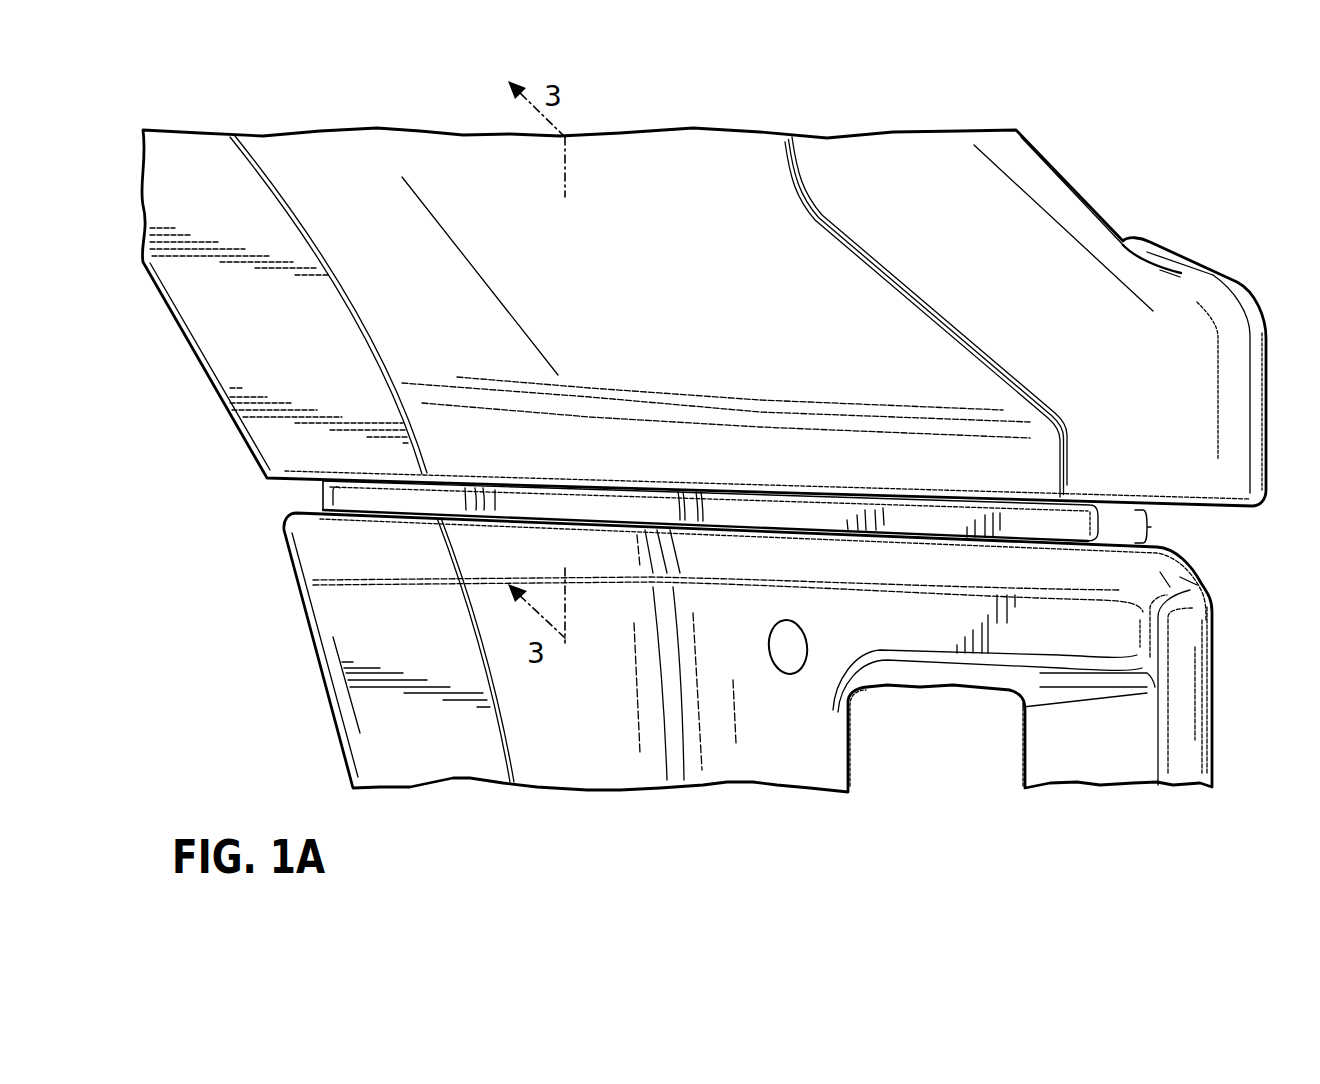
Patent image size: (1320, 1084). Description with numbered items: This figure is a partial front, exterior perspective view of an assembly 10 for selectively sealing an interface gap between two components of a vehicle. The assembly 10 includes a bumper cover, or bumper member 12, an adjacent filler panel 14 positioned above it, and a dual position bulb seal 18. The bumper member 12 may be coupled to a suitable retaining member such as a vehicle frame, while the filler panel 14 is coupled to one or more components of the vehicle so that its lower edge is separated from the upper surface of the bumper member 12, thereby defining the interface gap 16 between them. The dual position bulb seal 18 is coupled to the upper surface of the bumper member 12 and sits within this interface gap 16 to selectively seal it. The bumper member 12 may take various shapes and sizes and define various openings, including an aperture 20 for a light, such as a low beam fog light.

The assembly 10 is at (1101, 169).
The bumper member 12 is at (1185, 655).
The filler panel 14 is at (223, 335).
The interface gap 16 is at (1156, 526).
The dual position bulb seal 18 is at (325, 491).
The aperture 20 is at (1022, 727).